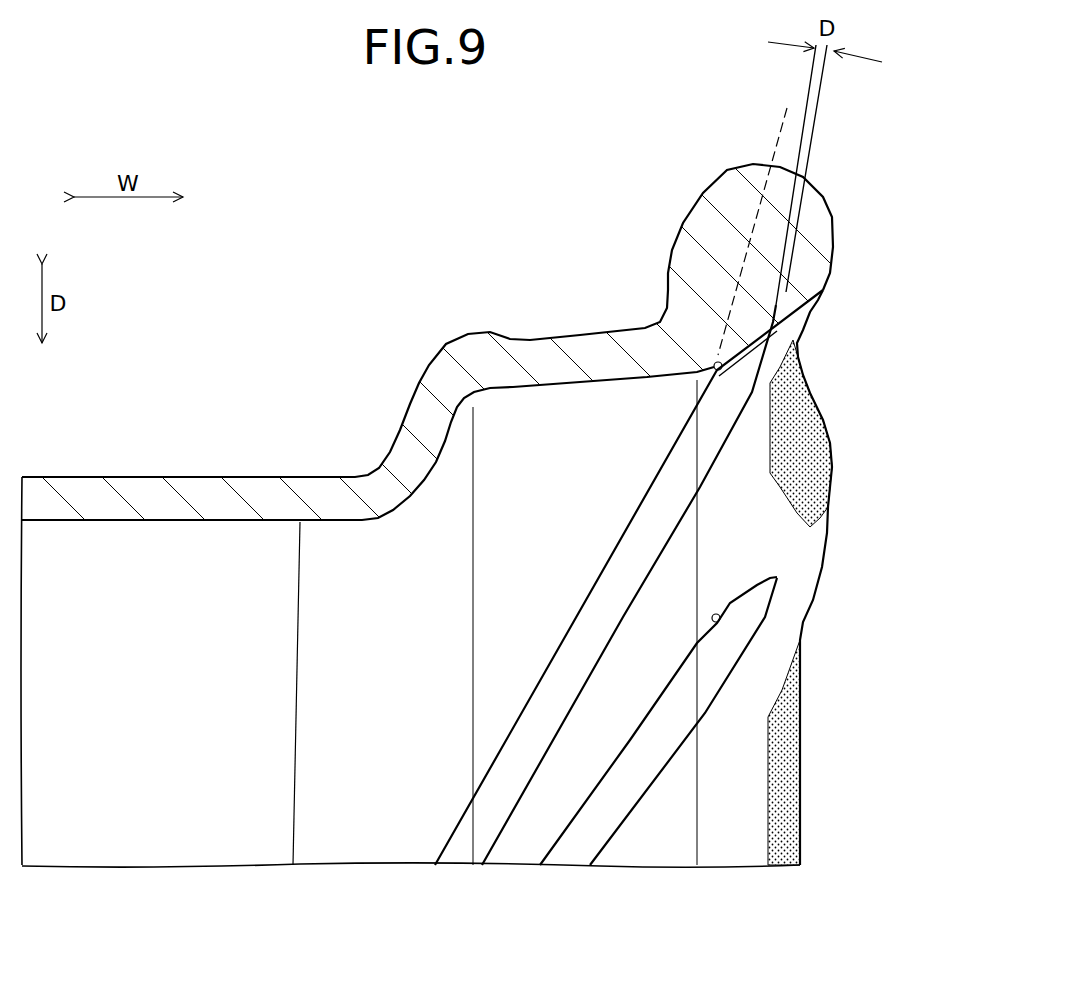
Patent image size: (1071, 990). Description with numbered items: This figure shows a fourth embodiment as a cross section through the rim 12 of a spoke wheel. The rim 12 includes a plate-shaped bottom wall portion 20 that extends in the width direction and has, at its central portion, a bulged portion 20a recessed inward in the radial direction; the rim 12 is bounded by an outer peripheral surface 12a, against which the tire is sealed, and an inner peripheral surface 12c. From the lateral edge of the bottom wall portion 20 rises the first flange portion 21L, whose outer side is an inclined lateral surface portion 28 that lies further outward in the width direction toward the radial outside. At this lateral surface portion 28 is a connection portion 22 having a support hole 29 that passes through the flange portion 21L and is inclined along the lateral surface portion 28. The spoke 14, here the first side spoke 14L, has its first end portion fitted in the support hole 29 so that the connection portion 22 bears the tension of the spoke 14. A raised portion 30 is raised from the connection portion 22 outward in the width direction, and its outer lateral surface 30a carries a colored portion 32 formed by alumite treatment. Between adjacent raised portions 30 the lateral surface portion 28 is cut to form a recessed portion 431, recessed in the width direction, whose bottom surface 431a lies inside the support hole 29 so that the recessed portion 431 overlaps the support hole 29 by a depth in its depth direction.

The rim 12 is at (48, 474).
The outer peripheral surface 12a is at (297, 477).
The inner peripheral surface 12c is at (292, 867).
The bottom wall portion 20 is at (530, 362).
The bulged portion 20a is at (140, 495).
The first flange portion 21L is at (722, 195).
The connection portion 22 is at (834, 177).
The lateral surface portion 28 is at (828, 300).
The support hole 29 is at (885, 595).
The raised portion 30 is at (836, 245).
The outer lateral surface 30a is at (835, 253).
The colored portion 32 is at (832, 273).
The spoke 14 is at (562, 742).
The first side spoke 14L is at (521, 782).
The recessed portion 431 is at (835, 194).
The bottom surface 431a is at (835, 224).